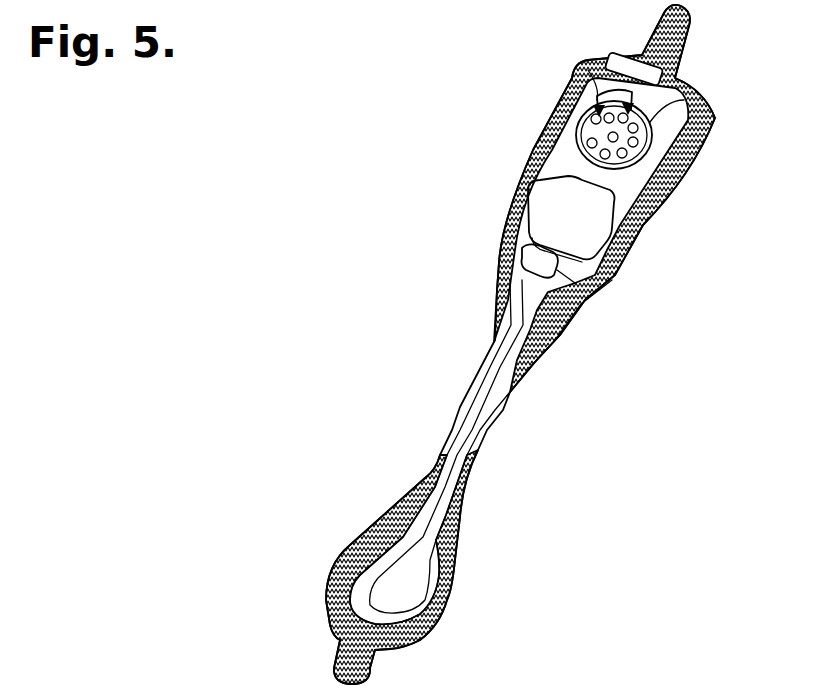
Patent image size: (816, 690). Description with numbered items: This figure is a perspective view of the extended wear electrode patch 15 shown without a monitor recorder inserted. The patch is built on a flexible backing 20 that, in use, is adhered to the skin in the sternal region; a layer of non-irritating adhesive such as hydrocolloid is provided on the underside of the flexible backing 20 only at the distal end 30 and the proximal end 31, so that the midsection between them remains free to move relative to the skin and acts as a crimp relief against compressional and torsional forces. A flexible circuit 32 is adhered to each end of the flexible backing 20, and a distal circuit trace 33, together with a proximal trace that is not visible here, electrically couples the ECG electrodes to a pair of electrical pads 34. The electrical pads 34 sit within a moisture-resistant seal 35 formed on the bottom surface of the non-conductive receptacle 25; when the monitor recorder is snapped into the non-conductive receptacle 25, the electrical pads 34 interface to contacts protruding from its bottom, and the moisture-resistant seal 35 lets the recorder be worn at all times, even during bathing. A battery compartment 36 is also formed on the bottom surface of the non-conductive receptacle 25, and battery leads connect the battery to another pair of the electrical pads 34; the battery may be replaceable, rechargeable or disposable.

The extended wear electrode patch 15 is at (388, 278).
The flexible backing 20 is at (515, 258).
The non-conductive receptacle 25 is at (548, 133).
The distal end 30 is at (508, 516).
The proximal end 31 is at (644, 293).
The flexible circuit 32 is at (571, 316).
The distal circuit trace 33 is at (497, 390).
The electrical pads 34 is at (586, 65).
The moisture-resistant seal 35 is at (700, 106).
The battery compartment 36 is at (528, 183).